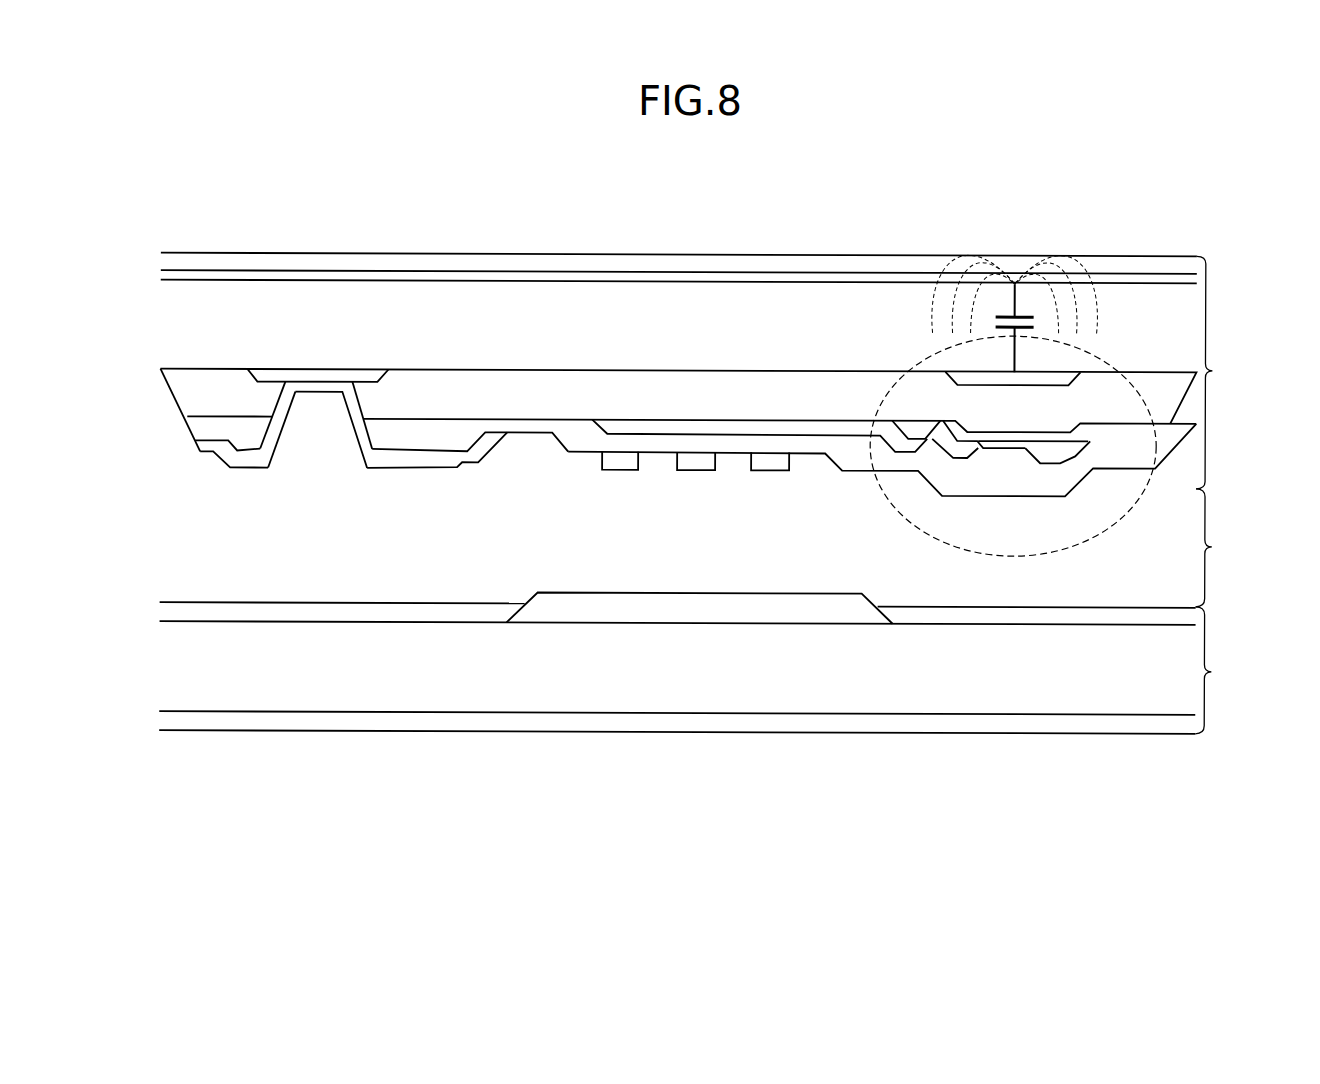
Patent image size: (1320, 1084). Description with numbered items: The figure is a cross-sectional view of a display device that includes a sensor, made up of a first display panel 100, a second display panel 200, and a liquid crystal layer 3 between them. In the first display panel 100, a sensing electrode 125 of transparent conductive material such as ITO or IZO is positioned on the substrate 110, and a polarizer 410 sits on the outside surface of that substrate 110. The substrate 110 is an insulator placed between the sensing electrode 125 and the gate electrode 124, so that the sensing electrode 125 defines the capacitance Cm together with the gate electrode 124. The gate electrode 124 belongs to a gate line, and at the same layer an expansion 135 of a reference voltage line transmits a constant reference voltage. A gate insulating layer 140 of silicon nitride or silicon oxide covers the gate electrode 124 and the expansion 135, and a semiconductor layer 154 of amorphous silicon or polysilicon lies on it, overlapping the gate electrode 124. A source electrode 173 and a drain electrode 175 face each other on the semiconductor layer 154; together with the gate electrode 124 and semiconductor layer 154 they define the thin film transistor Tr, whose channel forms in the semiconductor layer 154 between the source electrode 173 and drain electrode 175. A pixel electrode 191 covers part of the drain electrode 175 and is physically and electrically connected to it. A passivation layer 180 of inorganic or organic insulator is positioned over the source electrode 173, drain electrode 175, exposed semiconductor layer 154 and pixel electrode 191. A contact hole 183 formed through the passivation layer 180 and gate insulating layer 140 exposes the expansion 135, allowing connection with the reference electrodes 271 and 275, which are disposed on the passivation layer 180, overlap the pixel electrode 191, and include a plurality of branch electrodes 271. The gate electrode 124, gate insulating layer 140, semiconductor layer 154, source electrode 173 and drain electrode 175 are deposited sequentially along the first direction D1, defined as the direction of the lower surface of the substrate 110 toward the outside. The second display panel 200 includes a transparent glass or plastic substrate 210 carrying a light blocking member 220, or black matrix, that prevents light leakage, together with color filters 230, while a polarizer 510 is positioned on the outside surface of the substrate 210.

The substrate 110 is at (398, 305).
The sensing electrode 125 is at (652, 283).
The polarizer 410 is at (565, 262).
The gate insulating layer 140 is at (472, 388).
The expansion 135 is at (312, 377).
The gate electrode 124 is at (1050, 381).
The contact hole 183 is at (358, 405).
The reference electrode 275 is at (412, 460).
The passivation layer 180 is at (857, 458).
The pixel electrode 191 is at (732, 425).
The branch electrodes 271 is at (620, 460).
The semiconductor layer 154 is at (1015, 441).
The drain electrode 175 is at (973, 462).
The source electrode 173 is at (1050, 462).
The thin film transistor Tr is at (1124, 535).
The capacitance Cm is at (1015, 313).
The first direction D1 is at (145, 268).
The color filter 230 is at (668, 612).
The light blocking member 220 is at (948, 612).
The substrate 210 is at (1065, 690).
The polarizer 510 is at (552, 722).
The first display panel 100 is at (1226, 372).
The liquid crystal layer 3 is at (1215, 548).
The second display panel 200 is at (1225, 670).